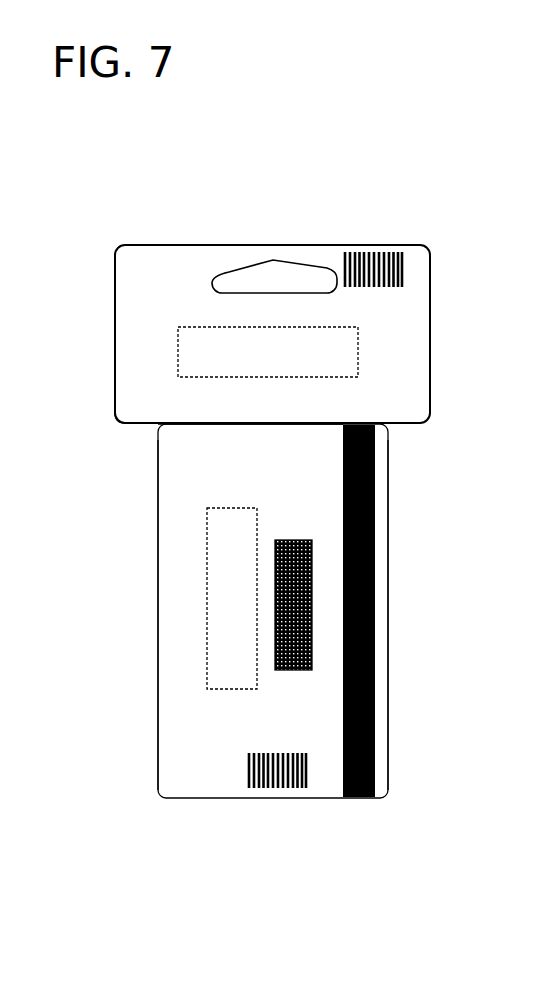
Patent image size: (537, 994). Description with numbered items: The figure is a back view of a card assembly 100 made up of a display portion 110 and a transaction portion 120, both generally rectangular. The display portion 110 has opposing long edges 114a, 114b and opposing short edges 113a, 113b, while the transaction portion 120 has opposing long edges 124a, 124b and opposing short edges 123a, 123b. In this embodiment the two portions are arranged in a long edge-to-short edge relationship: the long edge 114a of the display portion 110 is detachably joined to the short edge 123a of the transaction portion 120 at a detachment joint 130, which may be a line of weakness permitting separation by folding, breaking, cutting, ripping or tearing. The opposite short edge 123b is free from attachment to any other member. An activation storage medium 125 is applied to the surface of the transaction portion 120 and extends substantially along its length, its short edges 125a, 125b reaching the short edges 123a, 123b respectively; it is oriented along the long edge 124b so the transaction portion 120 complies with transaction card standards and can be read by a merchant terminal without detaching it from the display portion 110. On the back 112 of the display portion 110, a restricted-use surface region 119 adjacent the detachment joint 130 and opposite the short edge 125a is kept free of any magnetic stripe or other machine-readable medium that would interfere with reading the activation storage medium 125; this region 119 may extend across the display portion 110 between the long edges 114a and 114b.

The card assembly 100 is at (462, 111).
The display portion 110 is at (434, 282).
The back 112 is at (132, 395).
The short edge 113a is at (113, 332).
The short edge 113b is at (430, 327).
The long edge 114a is at (381, 413).
The long edge 114b is at (137, 243).
The surface region 119 is at (386, 424).
The transaction portion 120 is at (395, 697).
The short edge 123a is at (212, 431).
The short edge 123b is at (287, 795).
The long edge 124a is at (157, 637).
The long edge 124b is at (388, 620).
The activation storage medium 125 is at (377, 562).
The short edge 125a is at (377, 426).
The short edge 125b is at (365, 797).
The detachment joint 130 is at (178, 425).